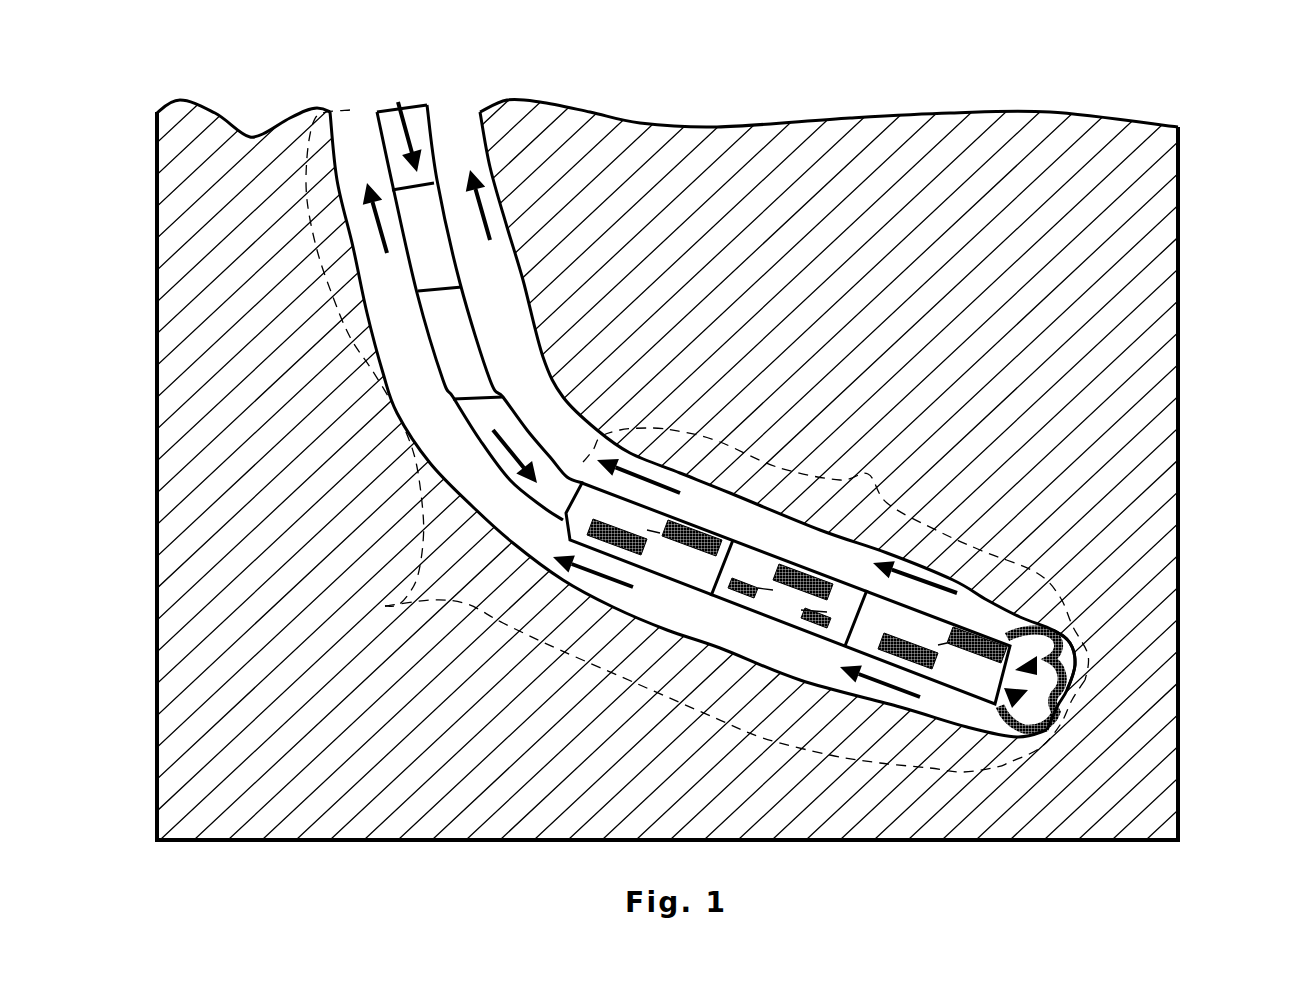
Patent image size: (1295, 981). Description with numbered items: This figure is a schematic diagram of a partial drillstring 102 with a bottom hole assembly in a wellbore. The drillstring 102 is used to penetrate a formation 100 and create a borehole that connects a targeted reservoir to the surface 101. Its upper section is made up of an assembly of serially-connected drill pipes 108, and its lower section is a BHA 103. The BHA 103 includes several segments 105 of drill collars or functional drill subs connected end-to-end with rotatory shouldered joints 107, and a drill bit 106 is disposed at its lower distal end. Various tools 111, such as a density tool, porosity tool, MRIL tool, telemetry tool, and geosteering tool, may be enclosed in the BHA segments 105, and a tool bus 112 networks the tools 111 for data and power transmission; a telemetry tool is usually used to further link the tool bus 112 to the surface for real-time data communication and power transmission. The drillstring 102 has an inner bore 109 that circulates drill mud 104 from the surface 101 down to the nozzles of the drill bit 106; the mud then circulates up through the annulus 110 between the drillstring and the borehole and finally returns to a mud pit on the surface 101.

The formation 100 is at (260, 190).
The surface 101 is at (1043, 101).
The drillstring 102 is at (400, 610).
The BHA 103 is at (881, 444).
The drill mud 104 is at (499, 166).
The segments 105 is at (845, 558).
The drill bit 106 is at (1085, 688).
The rotatory shouldered joints 107 is at (896, 596).
The drill pipes 108 is at (493, 329).
The inner bore 109 is at (404, 73).
The annulus 110 is at (466, 133).
The tools 111 is at (1078, 612).
The tool bus 112 is at (938, 629).